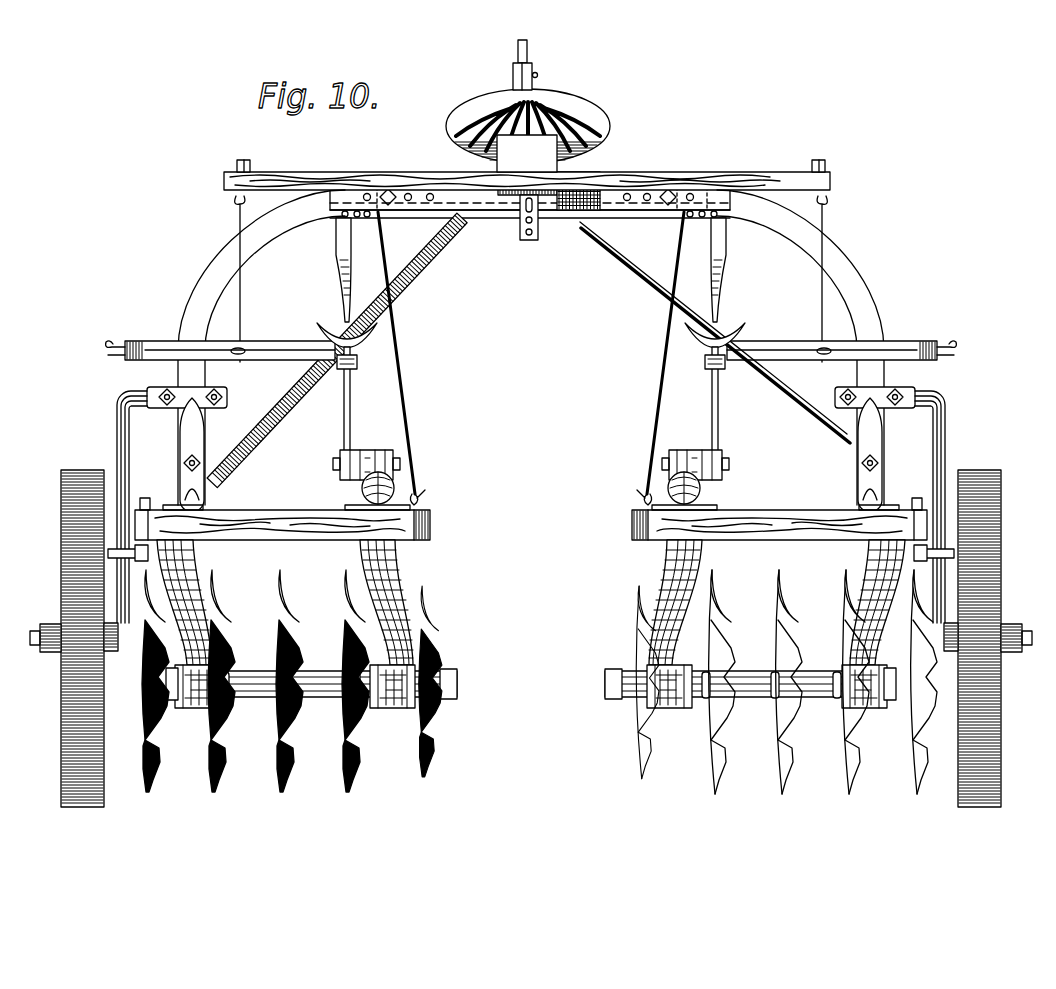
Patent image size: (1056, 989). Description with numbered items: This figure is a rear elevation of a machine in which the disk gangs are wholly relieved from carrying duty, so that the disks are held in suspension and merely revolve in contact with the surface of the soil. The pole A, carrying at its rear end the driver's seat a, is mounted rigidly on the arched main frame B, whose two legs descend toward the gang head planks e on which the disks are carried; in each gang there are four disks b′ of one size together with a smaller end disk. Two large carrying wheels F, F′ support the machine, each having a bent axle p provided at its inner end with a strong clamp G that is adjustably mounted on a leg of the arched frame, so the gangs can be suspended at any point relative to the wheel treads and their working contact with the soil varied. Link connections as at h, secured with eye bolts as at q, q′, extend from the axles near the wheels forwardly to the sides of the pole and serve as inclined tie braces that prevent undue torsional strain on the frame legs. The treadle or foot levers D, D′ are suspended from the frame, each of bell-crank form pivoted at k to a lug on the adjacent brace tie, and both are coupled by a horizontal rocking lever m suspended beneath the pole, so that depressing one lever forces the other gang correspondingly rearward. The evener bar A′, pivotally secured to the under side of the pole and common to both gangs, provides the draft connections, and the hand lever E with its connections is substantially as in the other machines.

The pole A is at (527, 153).
The driver's seat a is at (528, 119).
The hand lever E is at (528, 59).
The evener bar A′ is at (527, 168).
The arched main frame B is at (531, 347).
The horizontal rocking lever m is at (492, 222).
The clamp G is at (182, 410).
The tie rod h is at (337, 350).
The treadle lever D is at (358, 361).
The treadle lever D′ is at (703, 361).
The pivot k is at (715, 332).
The gang head plank e is at (531, 513).
The carrying wheel F is at (74, 638).
The carrying wheel F′ is at (988, 638).
The eye bolt q is at (108, 553).
The eye bolt q′ is at (955, 553).
The bent axle p is at (126, 636).
The disk b′ is at (539, 682).